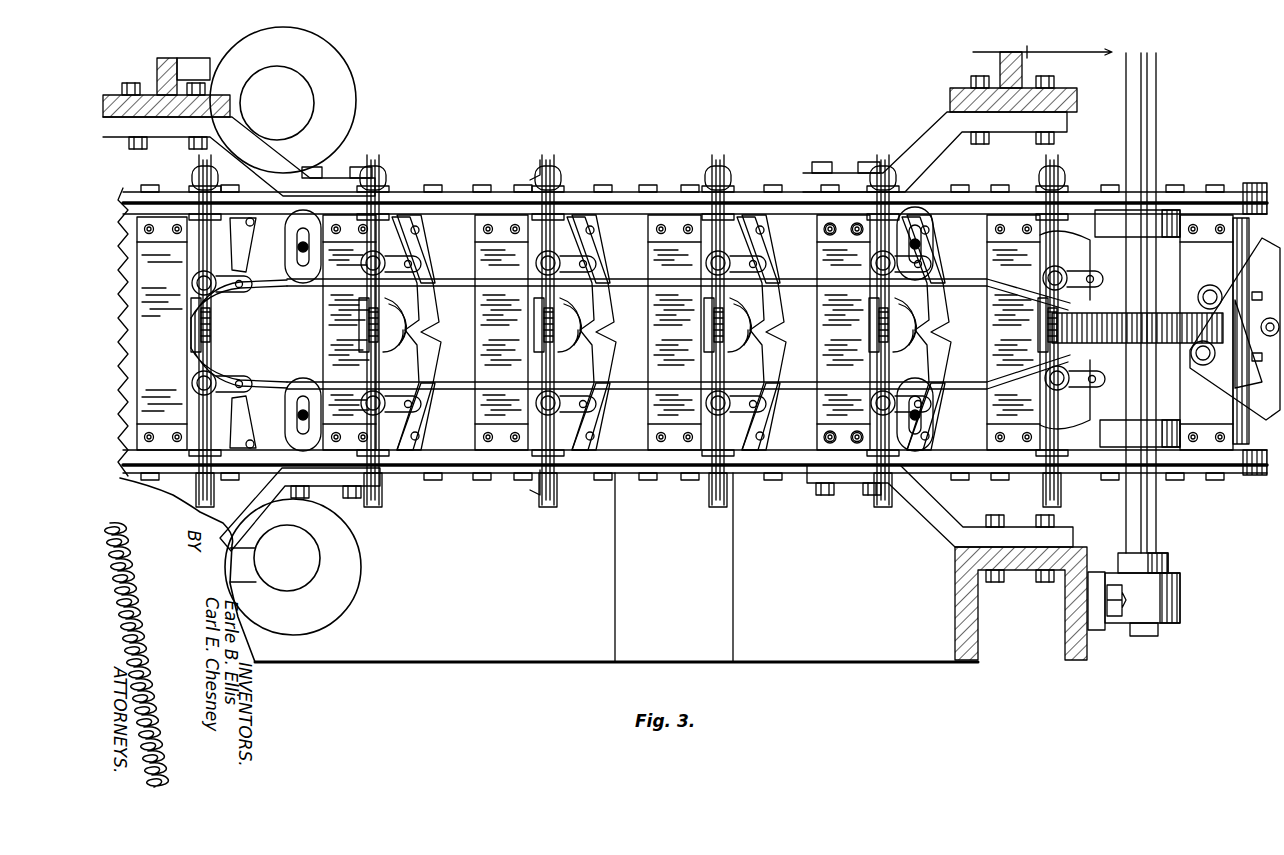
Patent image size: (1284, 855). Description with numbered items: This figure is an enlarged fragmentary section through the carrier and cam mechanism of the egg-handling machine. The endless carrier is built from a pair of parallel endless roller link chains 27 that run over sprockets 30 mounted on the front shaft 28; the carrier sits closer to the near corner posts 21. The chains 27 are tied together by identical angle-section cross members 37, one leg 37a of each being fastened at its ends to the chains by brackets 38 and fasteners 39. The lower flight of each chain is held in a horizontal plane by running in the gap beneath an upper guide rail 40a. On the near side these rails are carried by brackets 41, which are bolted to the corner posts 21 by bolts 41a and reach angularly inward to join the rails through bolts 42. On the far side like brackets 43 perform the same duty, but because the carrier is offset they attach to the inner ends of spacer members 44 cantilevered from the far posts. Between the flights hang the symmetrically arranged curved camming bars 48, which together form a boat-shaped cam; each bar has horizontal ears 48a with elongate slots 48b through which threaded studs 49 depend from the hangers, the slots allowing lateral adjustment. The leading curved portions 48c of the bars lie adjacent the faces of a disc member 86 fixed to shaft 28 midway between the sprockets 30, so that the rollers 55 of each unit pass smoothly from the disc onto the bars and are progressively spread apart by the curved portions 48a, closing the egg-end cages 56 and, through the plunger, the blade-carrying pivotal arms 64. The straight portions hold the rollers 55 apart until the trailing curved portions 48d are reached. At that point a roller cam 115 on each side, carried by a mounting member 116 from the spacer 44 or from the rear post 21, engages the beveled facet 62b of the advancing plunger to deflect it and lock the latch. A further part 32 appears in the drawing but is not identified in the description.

The corner post 21 is at (980, 616).
The endless roller link chain 27 is at (1245, 183).
The front shaft 28 is at (1156, 115).
The sprocket 30 is at (1180, 192).
The clamp nut 32 is at (1178, 622).
The cross member 37 is at (480, 307).
The leg of cross member 37a is at (492, 333).
The bracket 38 is at (835, 246).
The fastener 39 is at (850, 226).
The upper guide rail 40a is at (572, 203).
The bracket 41 is at (275, 505).
The bolt 41a is at (1040, 515).
The bolt 42 is at (870, 497).
The bracket 43 is at (268, 168).
The spacer member 44 is at (148, 75).
The camming bar 48 is at (848, 294).
The horizontal ear 48a is at (280, 286).
The slot 48b is at (315, 230).
The leading curved portion 48c is at (1010, 278).
The trailing curved portion 48d is at (190, 276).
The threaded stud 49 is at (310, 280).
The roller 55 is at (1068, 288).
The egg end contacting cage 56 is at (575, 308).
The beveled facet 62b is at (540, 168).
The pivotal arm 64 is at (275, 285).
The disc member 86 is at (1168, 310).
The roller cam 115 is at (352, 96).
The mounting member 116 is at (290, 75).